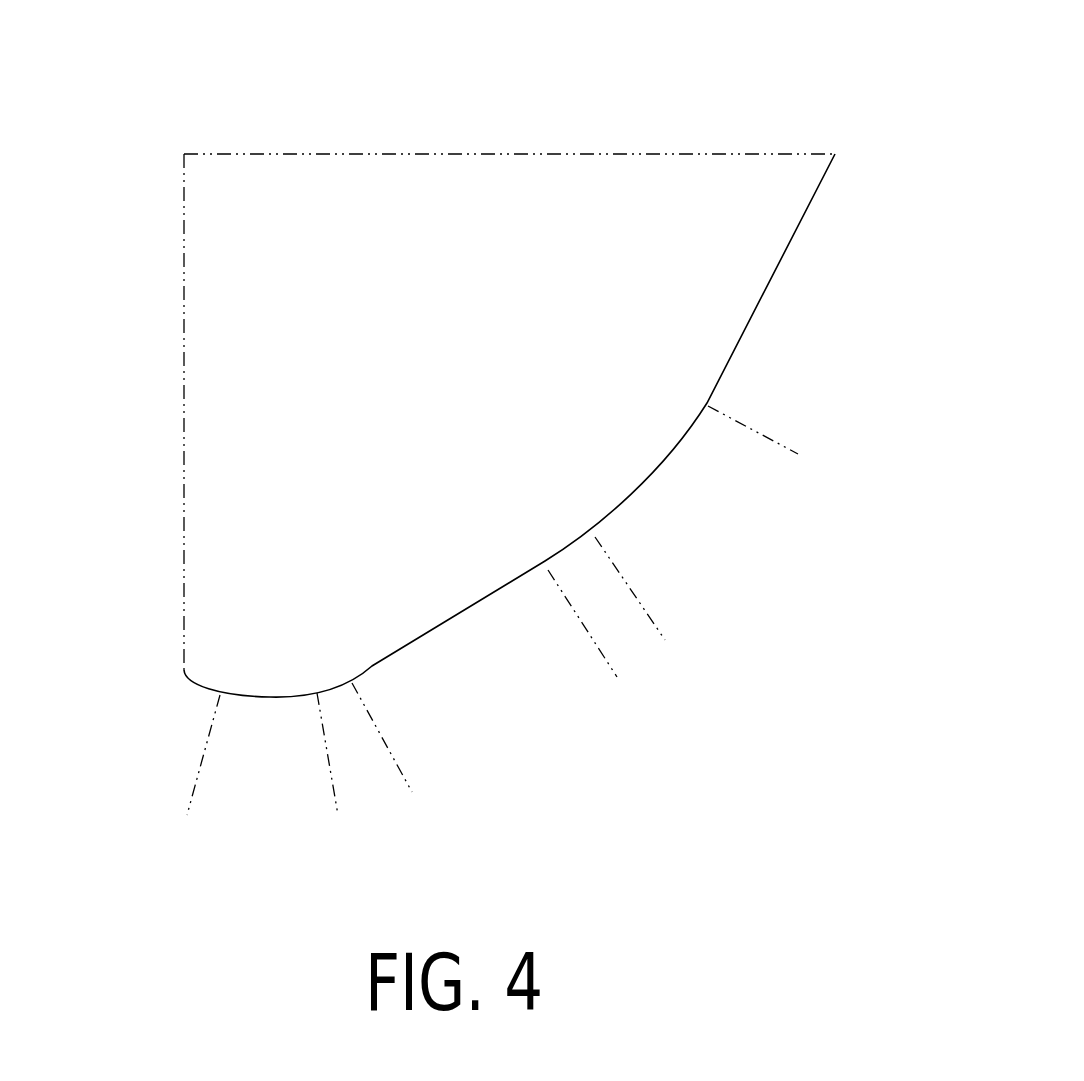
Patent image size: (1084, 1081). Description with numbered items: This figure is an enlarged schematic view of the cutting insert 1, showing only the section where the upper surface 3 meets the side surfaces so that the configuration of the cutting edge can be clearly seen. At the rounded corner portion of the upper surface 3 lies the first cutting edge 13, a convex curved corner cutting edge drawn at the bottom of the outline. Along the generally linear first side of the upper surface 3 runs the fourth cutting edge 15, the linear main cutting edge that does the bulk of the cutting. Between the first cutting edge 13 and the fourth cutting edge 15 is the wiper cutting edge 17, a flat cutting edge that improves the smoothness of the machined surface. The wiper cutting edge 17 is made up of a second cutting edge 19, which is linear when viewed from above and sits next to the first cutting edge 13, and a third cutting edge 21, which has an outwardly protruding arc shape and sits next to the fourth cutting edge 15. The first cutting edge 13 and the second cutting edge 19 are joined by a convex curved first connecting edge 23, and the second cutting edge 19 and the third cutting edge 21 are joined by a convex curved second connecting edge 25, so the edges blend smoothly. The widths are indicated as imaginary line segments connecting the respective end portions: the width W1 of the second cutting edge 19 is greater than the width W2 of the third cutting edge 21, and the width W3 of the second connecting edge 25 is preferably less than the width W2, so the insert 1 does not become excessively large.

The cutting insert 1 is at (292, 122).
The upper surface 3 is at (701, 186).
The first cutting edge 13 is at (325, 734).
The fourth cutting edge 15 is at (908, 170).
The wiper cutting edge 17 is at (454, 499).
The second cutting edge 19 is at (563, 590).
The third cutting edge 21 is at (743, 425).
The first connecting edge 23 is at (193, 772).
The second connecting edge 25 is at (625, 628).
The width of the second cutting edge W1 is at (425, 685).
The width of the third cutting edge W2 is at (713, 460).
The width of the second connecting edge W3 is at (595, 643).